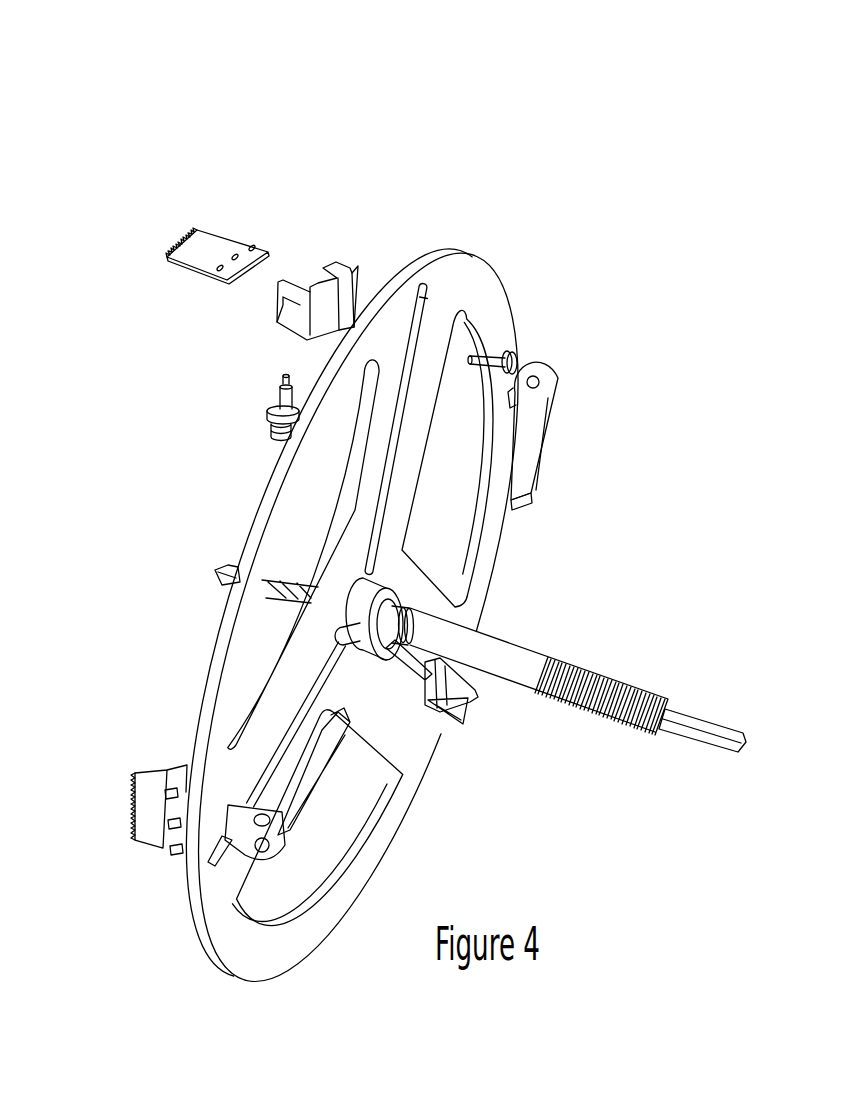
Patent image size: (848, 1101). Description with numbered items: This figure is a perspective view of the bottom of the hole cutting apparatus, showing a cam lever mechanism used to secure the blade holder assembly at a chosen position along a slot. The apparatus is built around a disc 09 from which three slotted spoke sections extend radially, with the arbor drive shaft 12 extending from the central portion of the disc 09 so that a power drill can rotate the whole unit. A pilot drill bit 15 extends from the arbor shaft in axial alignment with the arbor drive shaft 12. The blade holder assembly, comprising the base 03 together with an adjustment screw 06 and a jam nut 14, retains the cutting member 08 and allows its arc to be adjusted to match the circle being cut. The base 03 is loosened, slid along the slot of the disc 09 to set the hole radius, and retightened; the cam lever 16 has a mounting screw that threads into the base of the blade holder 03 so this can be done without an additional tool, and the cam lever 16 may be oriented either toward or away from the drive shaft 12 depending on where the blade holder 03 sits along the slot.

The blade holder assembly 03 is at (357, 266).
The adjustment screw 06 is at (260, 433).
The cutting member 08 is at (192, 230).
The disc 09 is at (243, 533).
The arbor drive shaft 12 is at (507, 640).
The jam nut 14 is at (263, 408).
The pilot drill bit 15 is at (207, 578).
The cam lever 16 is at (563, 400).